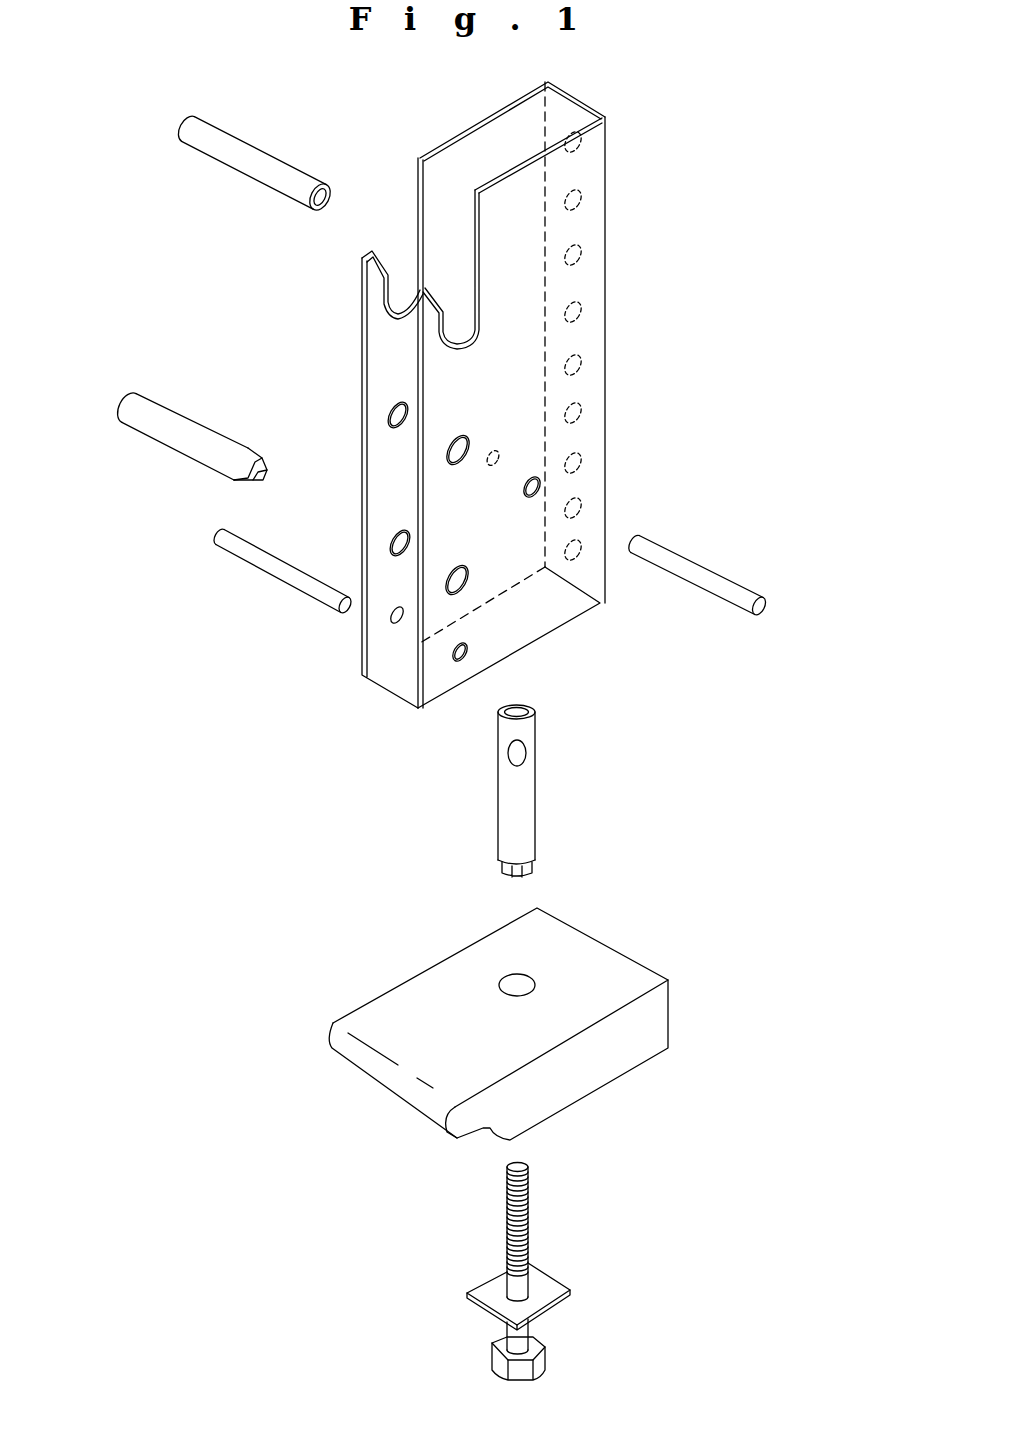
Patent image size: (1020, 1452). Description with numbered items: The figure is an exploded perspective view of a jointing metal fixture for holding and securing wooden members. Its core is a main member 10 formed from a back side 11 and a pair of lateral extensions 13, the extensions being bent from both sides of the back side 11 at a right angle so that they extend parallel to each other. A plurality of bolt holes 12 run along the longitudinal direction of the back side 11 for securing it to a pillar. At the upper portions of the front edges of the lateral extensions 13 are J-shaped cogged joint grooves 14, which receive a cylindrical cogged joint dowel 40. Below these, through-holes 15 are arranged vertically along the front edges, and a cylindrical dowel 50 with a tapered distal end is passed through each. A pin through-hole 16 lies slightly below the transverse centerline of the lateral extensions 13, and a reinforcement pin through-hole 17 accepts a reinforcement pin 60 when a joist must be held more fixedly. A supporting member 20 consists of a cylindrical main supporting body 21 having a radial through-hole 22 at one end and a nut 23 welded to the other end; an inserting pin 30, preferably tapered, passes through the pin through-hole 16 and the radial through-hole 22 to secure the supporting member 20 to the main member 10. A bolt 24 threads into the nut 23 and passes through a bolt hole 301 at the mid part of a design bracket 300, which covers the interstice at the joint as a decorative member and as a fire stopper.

The main member 10 is at (452, 440).
The back side 11 is at (585, 100).
The bolt holes 12 is at (583, 207).
The lateral extensions 13 is at (435, 672).
The cogged joint grooves 14 is at (477, 332).
The through-holes 15 is at (464, 462).
The pin through-hole 16 is at (540, 489).
The reinforcement pin through-hole 17 is at (457, 664).
The supporting member 20 is at (517, 799).
The main supporting body 21 is at (508, 832).
The radial through-hole 22 is at (526, 753).
The nut 23 is at (533, 870).
The bolt 24 is at (528, 1218).
The inserting pin 30 is at (670, 548).
The cogged joint dowel 40 is at (210, 158).
The dowel 50 is at (190, 452).
The reinforcement pin 60 is at (258, 560).
The design bracket 300 is at (534, 1024).
The bolt hole 301 is at (530, 987).